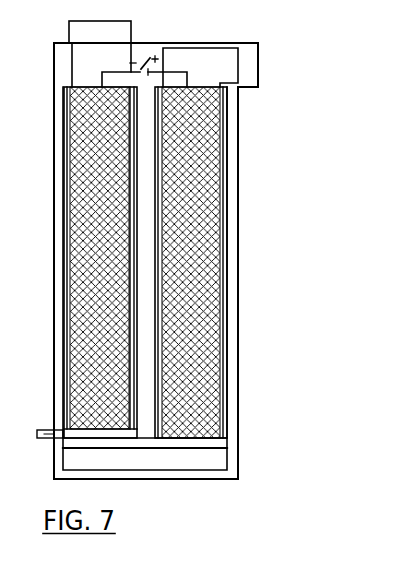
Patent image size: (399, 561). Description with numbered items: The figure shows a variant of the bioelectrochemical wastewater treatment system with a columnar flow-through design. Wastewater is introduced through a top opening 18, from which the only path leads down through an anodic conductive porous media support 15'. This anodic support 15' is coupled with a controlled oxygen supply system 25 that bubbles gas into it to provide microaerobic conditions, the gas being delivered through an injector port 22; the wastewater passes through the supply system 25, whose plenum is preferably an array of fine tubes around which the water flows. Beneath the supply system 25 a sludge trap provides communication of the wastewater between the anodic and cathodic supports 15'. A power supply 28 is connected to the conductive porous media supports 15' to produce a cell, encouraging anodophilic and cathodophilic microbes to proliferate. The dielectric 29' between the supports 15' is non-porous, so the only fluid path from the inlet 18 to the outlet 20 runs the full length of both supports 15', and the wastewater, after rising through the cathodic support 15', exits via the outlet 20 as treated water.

The top opening 18 is at (103, 68).
The outlet 20 is at (222, 76).
The power supply 28 is at (148, 57).
The conductive porous media support 15' is at (145, 262).
The dielectric 29' is at (83, 326).
The controlled oxygen supply system 25 is at (65, 430).
The injector port 22 is at (37, 435).